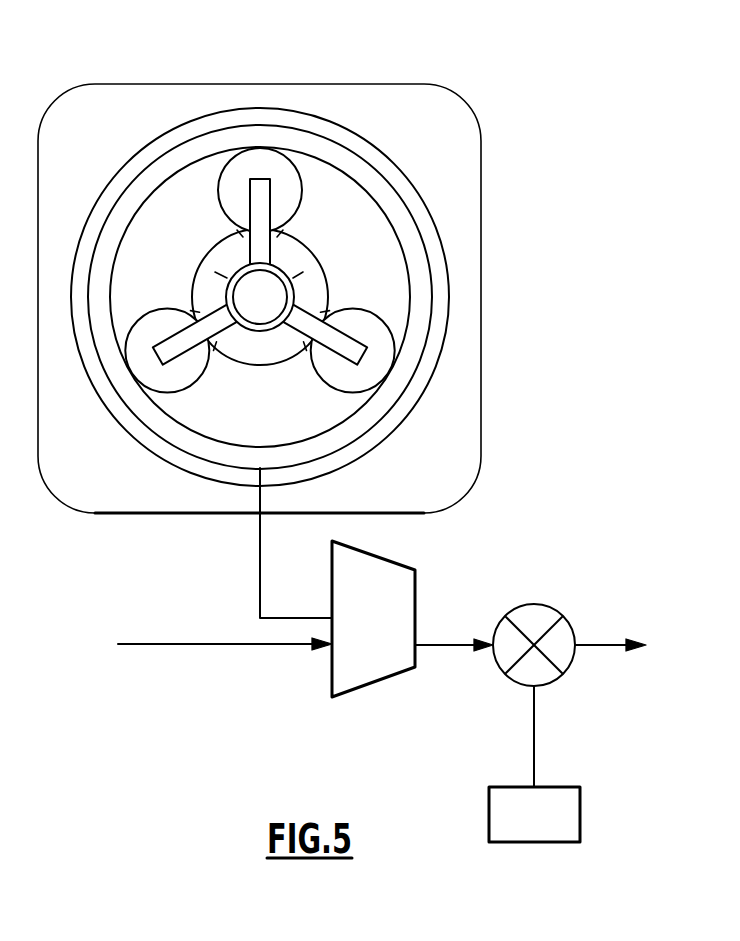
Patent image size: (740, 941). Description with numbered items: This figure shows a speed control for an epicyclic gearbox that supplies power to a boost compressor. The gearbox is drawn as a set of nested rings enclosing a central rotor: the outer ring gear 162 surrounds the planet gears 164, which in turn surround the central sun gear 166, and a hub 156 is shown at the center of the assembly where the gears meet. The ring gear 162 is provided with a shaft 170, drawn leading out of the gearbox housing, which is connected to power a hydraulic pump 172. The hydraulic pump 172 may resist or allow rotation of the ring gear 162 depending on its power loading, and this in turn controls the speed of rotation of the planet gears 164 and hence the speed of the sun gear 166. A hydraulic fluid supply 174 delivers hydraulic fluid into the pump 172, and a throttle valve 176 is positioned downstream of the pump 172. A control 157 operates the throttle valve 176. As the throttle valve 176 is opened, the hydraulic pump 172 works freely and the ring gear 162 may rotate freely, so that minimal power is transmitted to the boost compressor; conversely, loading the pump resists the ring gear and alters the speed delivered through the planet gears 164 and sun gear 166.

The fan hub 156 is at (308, 260).
The control 157 is at (570, 812).
The ring gear 162 is at (128, 410).
The planet gears 164 is at (243, 170).
The sun gear 166 is at (308, 278).
The shaft 170 is at (258, 556).
The hydraulic pump 172 is at (388, 575).
The hydraulic fluid supply 174 is at (162, 646).
The throttle valve 176 is at (553, 607).